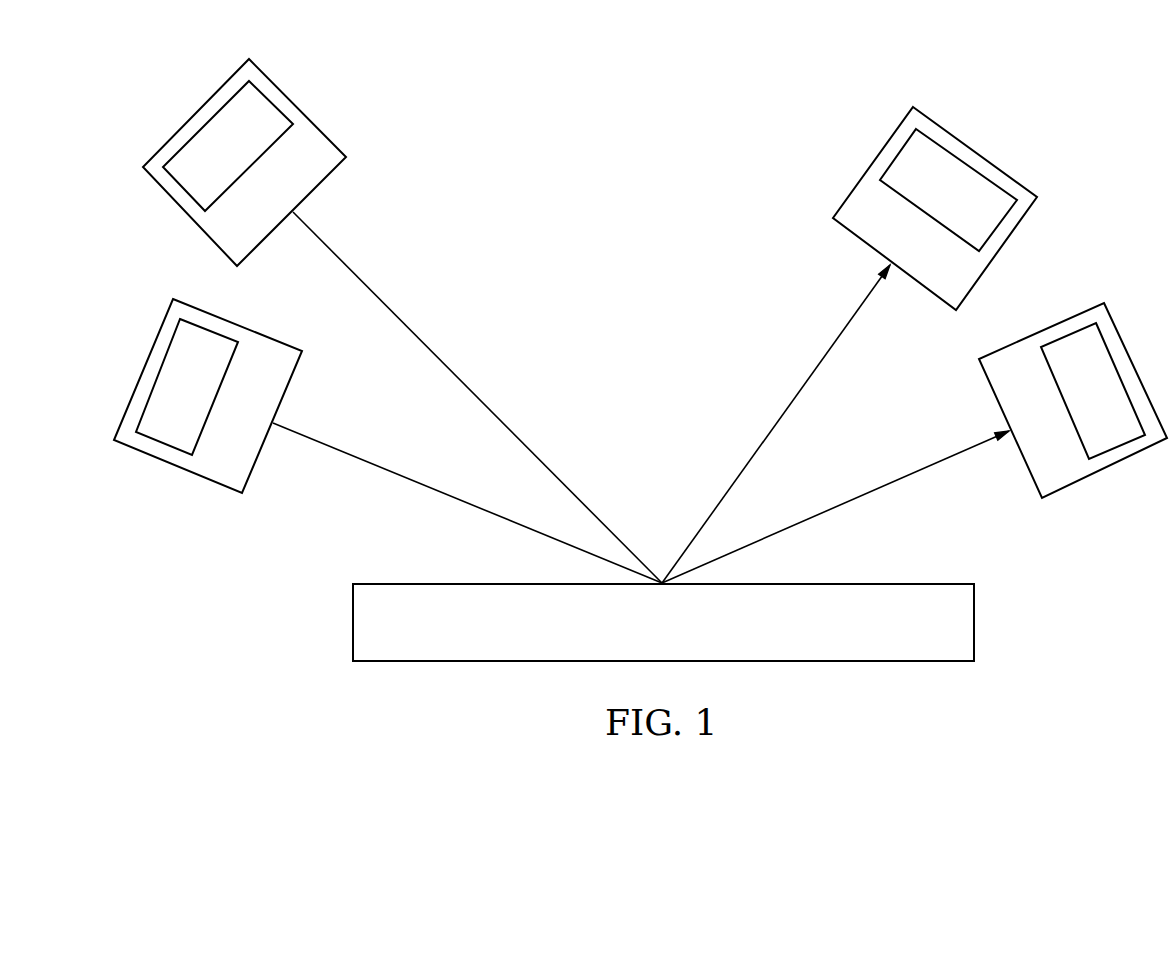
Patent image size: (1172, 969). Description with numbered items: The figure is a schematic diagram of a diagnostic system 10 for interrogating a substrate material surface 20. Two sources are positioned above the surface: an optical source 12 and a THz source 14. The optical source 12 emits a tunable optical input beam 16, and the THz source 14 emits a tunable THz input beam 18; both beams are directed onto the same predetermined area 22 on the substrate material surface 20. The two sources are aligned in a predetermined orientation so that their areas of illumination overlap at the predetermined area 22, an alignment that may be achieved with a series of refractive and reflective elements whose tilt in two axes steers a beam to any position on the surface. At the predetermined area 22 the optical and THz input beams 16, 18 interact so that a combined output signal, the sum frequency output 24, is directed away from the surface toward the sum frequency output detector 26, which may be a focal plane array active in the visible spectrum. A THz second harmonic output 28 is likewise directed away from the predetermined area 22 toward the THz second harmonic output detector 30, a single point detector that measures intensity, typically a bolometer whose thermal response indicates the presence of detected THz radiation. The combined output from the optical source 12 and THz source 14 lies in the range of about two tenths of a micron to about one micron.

The diagnostic system 10 is at (650, 354).
The optical source 12 is at (290, 97).
The THz source 14 is at (148, 458).
The tunable optical input beam 16 is at (412, 328).
The tunable THz input beam 18 is at (379, 465).
The substrate material surface 20 is at (975, 620).
The predetermined area 22 is at (660, 577).
The sum frequency output 24 is at (840, 338).
The sum frequency output detector 26 is at (875, 155).
The THz second harmonic output 28 is at (930, 465).
The THz second harmonic output detector 30 is at (1099, 473).